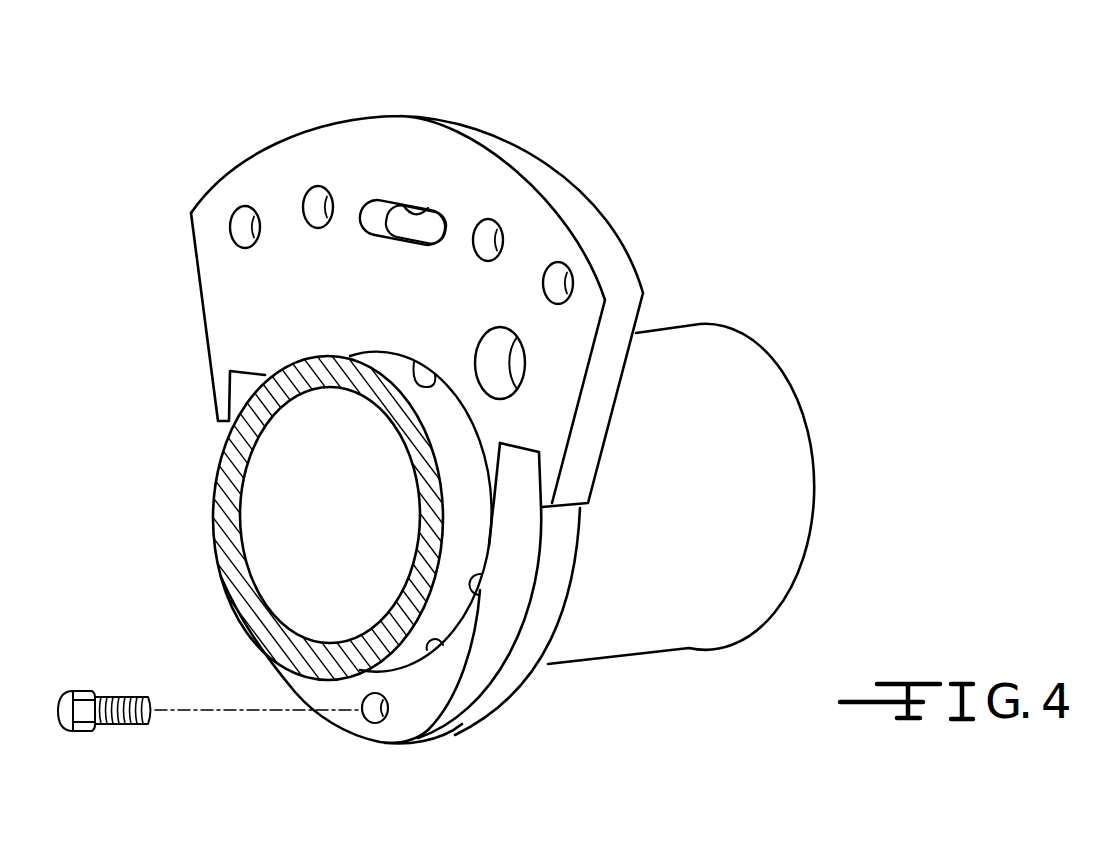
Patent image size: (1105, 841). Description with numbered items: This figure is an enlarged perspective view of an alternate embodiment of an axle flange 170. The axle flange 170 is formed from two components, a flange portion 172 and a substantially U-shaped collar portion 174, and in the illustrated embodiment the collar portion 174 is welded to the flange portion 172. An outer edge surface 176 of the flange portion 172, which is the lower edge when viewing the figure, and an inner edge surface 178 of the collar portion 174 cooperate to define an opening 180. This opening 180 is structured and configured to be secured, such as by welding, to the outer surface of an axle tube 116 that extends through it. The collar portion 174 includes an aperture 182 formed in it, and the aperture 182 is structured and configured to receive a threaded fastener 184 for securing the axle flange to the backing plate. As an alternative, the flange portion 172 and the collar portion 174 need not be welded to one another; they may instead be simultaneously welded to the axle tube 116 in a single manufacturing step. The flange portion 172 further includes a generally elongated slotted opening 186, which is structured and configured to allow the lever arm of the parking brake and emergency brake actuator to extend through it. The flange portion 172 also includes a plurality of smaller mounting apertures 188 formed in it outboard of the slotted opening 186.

The axle tube 116 is at (740, 380).
The axle flange 170 is at (303, 100).
The flange portion 172 is at (243, 335).
The collar portion 174 is at (295, 688).
The outer edge surface 176 is at (437, 385).
The inner edge surface 178 is at (428, 650).
The opening 180 is at (478, 600).
The aperture 182 is at (378, 716).
The threaded fastener 184 is at (125, 725).
The slotted opening 186 is at (429, 207).
The mounting apertures 188 is at (247, 206).